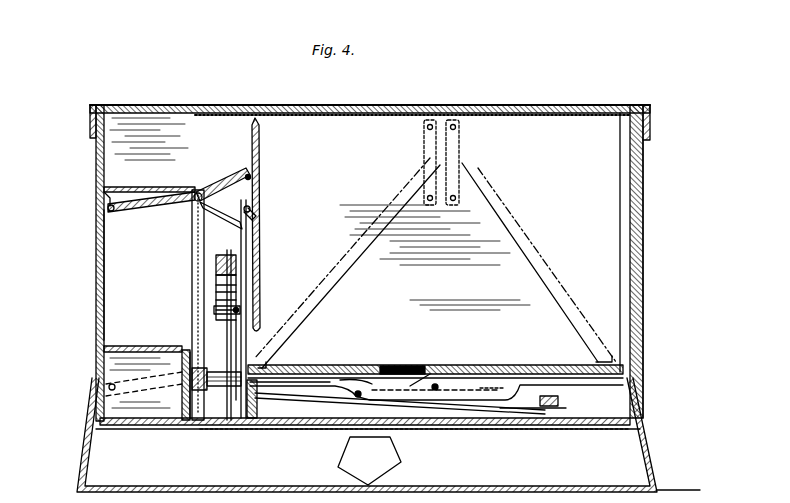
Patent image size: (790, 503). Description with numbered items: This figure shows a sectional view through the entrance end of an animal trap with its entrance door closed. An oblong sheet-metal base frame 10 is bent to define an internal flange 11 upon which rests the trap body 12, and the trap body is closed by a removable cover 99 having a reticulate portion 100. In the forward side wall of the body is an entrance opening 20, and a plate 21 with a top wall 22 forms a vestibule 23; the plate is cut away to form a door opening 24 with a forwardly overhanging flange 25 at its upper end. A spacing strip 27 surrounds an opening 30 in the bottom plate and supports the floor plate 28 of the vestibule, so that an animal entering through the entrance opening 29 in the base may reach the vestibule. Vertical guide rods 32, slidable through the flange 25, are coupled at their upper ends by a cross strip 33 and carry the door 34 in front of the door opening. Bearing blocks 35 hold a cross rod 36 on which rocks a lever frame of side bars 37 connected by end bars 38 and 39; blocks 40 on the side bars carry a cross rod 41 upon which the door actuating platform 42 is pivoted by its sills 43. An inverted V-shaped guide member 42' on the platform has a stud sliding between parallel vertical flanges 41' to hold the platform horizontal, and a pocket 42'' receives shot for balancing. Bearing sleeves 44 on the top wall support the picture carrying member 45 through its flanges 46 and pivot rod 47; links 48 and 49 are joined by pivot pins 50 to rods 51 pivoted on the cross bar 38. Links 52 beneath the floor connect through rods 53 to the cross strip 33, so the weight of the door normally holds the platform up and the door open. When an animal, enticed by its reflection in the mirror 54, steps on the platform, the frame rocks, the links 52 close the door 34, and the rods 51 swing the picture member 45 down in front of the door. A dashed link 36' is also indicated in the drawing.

The base frame 10 is at (652, 445).
The internal flange 11 is at (592, 130).
The trap body 12 is at (645, 300).
The entrance opening 20 is at (96, 330).
The plate 21 is at (246, 245).
The top wall 22 is at (130, 187).
The vestibule 23 is at (122, 255).
The door opening 24 is at (241, 315).
The forwardly overhanging flange 25 is at (216, 292).
The spacing strip 27 is at (194, 404).
The floor plate 28 is at (128, 346).
The entrance opening 29 is at (400, 462).
The opening 30 is at (135, 427).
The vertical guide rods 32 is at (250, 400).
The cross strip 33 is at (237, 265).
The door 34 is at (246, 340).
The bearing blocks 35 is at (440, 408).
The cross rod 36 is at (327, 427).
The link 36' is at (144, 383).
The side bars 37 is at (298, 357).
The end bar 38 is at (205, 392).
The end bar 39 is at (552, 365).
The blocks 40 is at (493, 366).
The cross rod 41 is at (436, 368).
The parallel vertical flanges 41' is at (470, 162).
The door actuating platform 42 is at (402, 353).
The inverted V-shaped guide member 42' is at (435, 263).
The pocket 42'' is at (439, 353).
The sills 43 is at (368, 380).
The bearing sleeves 44 is at (240, 215).
The picture carrying member 45 is at (258, 192).
The flanges 46 is at (251, 160).
The pivot rod 47 is at (258, 206).
The links 48 is at (225, 182).
The links 49 is at (150, 214).
The pivot pins 50 is at (198, 193).
The rods 51 is at (192, 266).
The links 52 is at (205, 366).
The rods 53 is at (237, 292).
The mirror 54 is at (645, 216).
The cover 99 is at (578, 105).
The reticulate portion 100 is at (515, 106).